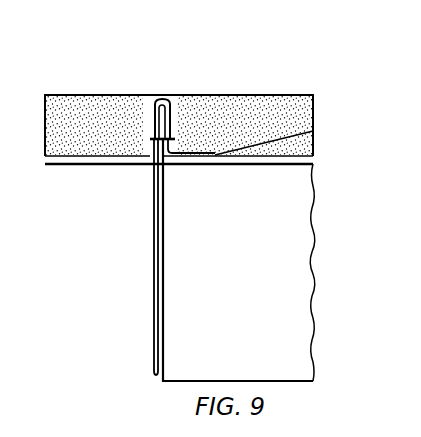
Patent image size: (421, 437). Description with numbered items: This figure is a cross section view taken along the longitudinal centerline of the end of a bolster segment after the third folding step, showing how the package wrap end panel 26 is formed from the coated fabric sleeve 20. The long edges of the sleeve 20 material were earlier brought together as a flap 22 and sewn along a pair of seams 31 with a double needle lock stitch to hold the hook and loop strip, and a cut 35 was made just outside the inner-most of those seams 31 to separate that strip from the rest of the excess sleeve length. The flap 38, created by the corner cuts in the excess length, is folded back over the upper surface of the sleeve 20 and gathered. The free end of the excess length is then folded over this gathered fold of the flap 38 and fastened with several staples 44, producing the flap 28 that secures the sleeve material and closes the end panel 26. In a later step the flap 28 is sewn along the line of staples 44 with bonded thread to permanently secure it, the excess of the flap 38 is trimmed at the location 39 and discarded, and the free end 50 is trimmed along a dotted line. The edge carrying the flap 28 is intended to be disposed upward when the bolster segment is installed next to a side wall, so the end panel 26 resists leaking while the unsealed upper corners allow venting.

The sleeve 20 is at (248, 281).
The flap 22 is at (297, 96).
The end panel 26 is at (150, 240).
The flap 28 is at (169, 98).
The sewn seams 31 is at (260, 97).
The cut 35 is at (87, 167).
The flap 38 is at (300, 127).
The trim location 39 is at (203, 153).
The staples 44 is at (148, 137).
The free end 50 is at (92, 94).